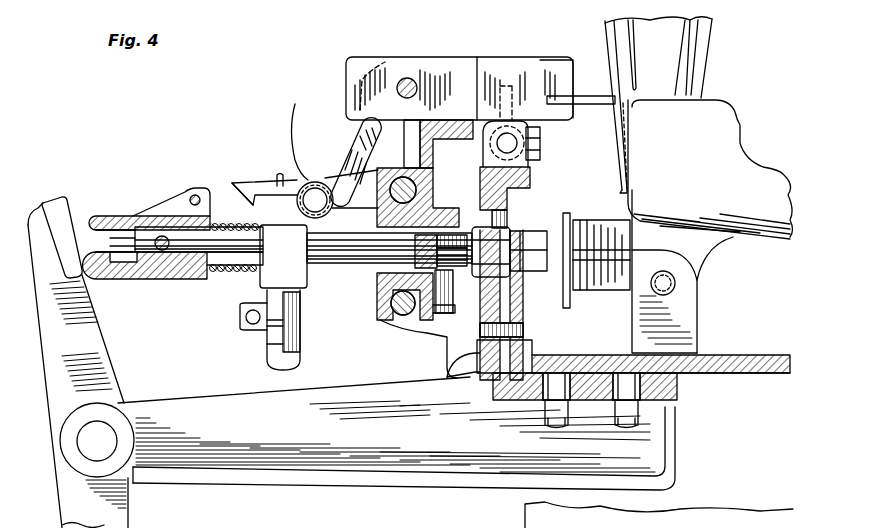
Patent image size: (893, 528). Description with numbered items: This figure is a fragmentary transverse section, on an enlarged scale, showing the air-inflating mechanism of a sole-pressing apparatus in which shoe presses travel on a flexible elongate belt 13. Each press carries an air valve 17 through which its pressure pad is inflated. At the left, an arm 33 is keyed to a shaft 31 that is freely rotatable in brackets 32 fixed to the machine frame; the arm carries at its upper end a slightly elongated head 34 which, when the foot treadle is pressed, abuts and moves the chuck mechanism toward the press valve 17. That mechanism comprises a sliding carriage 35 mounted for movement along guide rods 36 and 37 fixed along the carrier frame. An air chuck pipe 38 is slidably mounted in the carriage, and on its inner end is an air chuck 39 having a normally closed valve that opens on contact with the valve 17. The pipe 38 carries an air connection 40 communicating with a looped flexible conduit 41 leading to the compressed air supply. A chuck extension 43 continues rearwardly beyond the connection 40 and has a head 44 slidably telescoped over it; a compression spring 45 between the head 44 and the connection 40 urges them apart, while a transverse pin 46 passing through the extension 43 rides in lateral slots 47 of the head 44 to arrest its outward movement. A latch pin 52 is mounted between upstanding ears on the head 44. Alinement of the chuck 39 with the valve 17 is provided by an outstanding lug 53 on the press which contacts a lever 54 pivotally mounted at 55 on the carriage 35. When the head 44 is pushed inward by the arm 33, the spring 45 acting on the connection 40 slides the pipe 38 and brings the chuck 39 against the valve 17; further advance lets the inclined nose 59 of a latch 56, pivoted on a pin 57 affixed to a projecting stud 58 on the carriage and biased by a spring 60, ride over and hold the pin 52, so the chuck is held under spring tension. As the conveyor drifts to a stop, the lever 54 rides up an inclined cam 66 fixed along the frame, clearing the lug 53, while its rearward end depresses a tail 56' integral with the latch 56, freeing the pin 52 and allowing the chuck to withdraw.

The belt 13 is at (752, 373).
The valve 17 is at (580, 247).
The shaft 31 is at (107, 436).
The brackets 32 is at (318, 466).
The arm 33 is at (87, 342).
The head 34 is at (62, 205).
The sliding carriage 35 is at (428, 181).
The guide rod 36 is at (428, 199).
The guide rod 37 is at (403, 318).
The air chuck pipe 38 is at (345, 256).
The air chuck 39 is at (533, 230).
The air connection 40 is at (263, 280).
The flexible conduit 41 is at (268, 350).
The chuck extension 43 is at (165, 228).
The head 44 is at (130, 215).
The compression spring 45 is at (218, 224).
The transverse pin 46 is at (163, 254).
The lateral slots 47 is at (108, 230).
The latch pin 52 is at (198, 196).
The lug 53 is at (597, 106).
The lever 54 is at (548, 67).
The pivot 55 is at (410, 82).
The latch 56 is at (305, 174).
The tail 56' is at (444, 84).
The pin 57 is at (315, 194).
The projecting stud 58 is at (353, 130).
The inclined nose 59 is at (244, 195).
The spring 60 is at (295, 106).
The inclined cam 66 is at (503, 78).